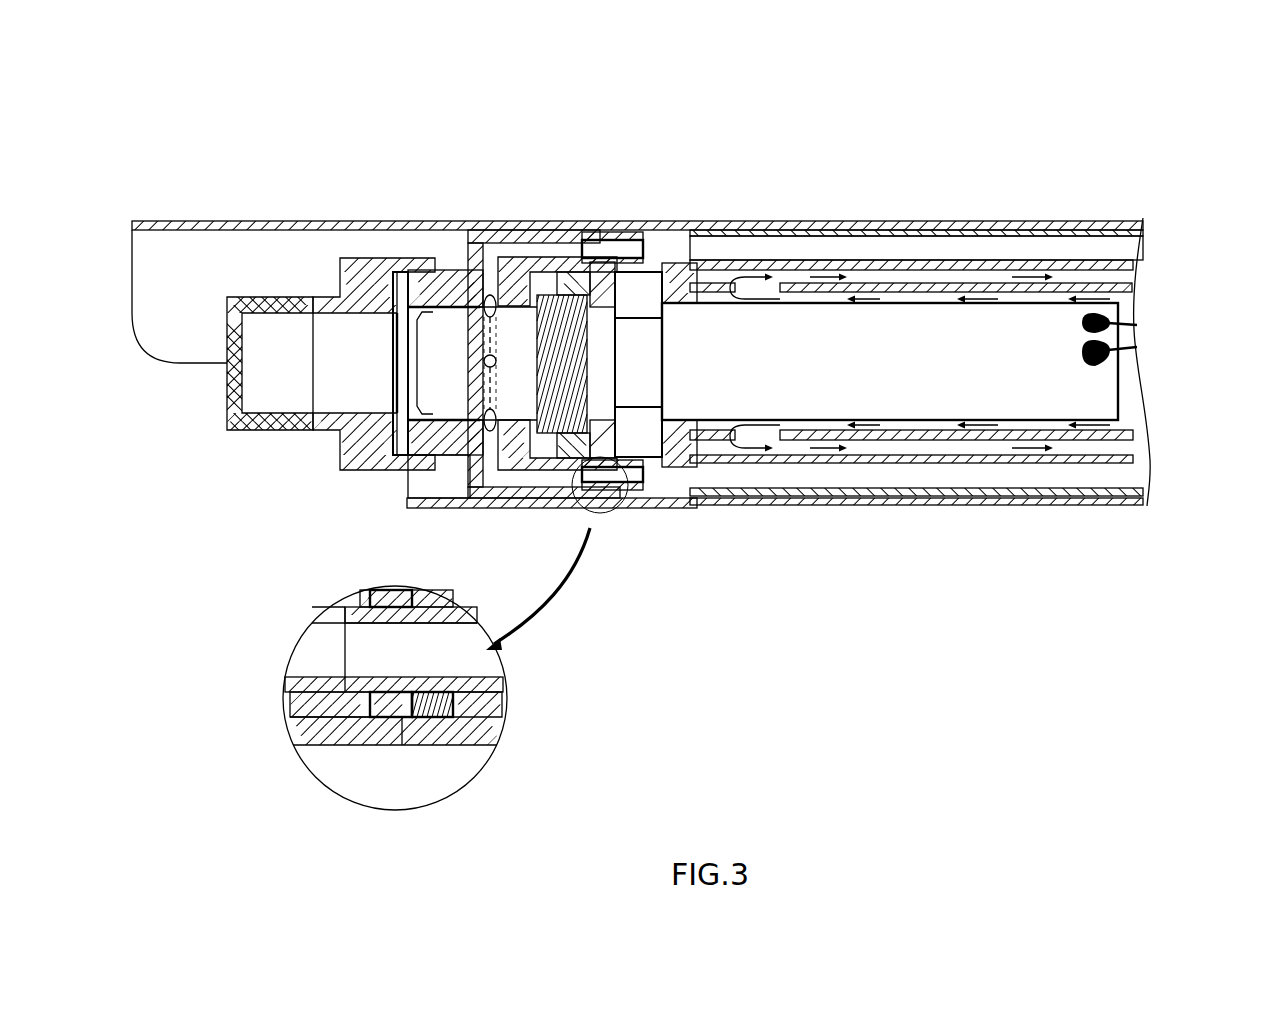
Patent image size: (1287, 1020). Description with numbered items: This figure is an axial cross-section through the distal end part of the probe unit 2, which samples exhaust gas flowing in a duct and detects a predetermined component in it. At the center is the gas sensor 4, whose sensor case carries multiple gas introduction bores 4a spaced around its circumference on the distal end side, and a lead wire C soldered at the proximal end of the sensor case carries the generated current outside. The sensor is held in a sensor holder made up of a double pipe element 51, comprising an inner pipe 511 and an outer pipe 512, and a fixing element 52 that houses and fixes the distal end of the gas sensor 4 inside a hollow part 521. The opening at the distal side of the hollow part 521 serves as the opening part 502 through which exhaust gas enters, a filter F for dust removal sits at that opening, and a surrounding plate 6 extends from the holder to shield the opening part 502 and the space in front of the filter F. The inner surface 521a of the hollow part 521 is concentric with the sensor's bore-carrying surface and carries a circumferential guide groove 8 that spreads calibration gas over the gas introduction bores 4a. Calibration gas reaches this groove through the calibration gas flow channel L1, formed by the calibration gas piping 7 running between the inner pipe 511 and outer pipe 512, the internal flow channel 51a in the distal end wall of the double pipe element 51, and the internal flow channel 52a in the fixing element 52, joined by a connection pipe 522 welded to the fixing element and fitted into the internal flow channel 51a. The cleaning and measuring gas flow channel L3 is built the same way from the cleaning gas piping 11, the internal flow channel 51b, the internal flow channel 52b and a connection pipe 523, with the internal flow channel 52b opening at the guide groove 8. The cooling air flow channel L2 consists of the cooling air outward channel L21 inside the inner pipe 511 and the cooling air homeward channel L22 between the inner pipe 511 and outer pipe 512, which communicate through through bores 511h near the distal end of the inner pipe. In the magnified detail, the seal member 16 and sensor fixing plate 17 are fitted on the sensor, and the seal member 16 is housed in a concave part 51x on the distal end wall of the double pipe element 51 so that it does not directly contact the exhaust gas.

The probe unit 2 is at (258, 99).
The surrounding plate 6 is at (286, 221).
The cleaning gas piping 11 is at (907, 230).
The outer pipe 512 is at (845, 221).
The cleaning and measuring gas flow channel L3 is at (930, 247).
The calibration gas piping 7 is at (782, 502).
The filter F is at (227, 393).
The hollow part 521 is at (430, 262).
The inner surface of the hollow part 521a is at (385, 418).
The opening part 502 is at (410, 357).
The guide groove 8 is at (445, 452).
The fixing element 52 is at (455, 266).
The internal flow channel 52a is at (518, 504).
The internal flow channel 52b is at (548, 258).
The connection pipe 523 is at (620, 233).
The connection pipe 522 is at (632, 492).
The sensor fixing plate 17 is at (388, 692).
The seal member 16 is at (436, 692).
The concave part 51x is at (425, 718).
The internal flow channel 51b is at (690, 262).
The internal flow channel 51a is at (690, 468).
The double pipe element 51 is at (757, 258).
The inner pipe 511 is at (987, 283).
The through bores 511h is at (770, 296).
The gas sensor 4 is at (900, 428).
The gas introduction bores 4a is at (486, 412).
The lead wire C is at (1140, 325).
The calibration gas flow channel L1 is at (962, 468).
The cooling air outward channel L21 is at (1140, 408).
The cooling air flow channel L2 is at (1254, 385).
The cooling air homeward channel L22 is at (1150, 446).